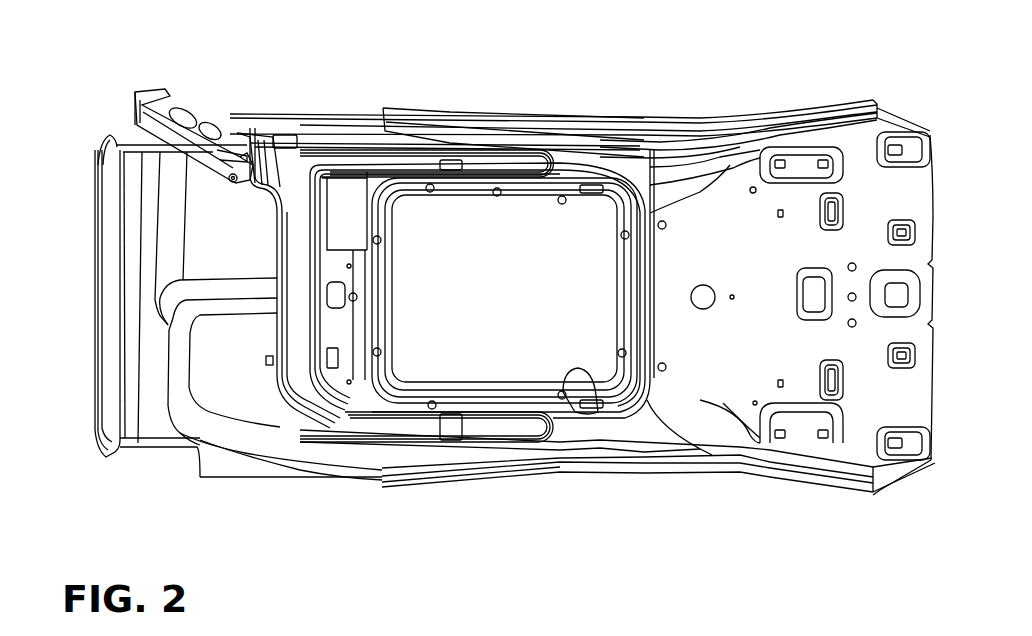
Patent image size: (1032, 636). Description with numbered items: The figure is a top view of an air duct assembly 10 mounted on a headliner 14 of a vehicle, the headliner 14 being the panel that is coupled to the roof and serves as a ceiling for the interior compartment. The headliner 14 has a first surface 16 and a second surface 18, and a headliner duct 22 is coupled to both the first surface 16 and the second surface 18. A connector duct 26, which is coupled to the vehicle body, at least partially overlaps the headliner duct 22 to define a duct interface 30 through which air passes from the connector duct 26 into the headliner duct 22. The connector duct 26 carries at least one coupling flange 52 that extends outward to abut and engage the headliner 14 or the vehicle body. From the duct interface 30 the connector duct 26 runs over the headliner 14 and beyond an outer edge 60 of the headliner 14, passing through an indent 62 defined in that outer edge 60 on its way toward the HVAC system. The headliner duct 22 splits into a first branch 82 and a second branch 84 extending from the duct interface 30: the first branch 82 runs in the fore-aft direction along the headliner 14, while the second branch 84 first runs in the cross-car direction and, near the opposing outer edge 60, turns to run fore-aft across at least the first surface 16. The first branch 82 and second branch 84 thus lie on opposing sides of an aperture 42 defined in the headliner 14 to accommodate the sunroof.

The air duct assembly 10 is at (236, 95).
The headliner 14 is at (760, 120).
The first surface 16 is at (247, 222).
The second surface 18 is at (307, 132).
The headliner duct 22 is at (332, 140).
The connector duct 26 is at (181, 108).
The duct interface 30 is at (225, 203).
The aperture 42 is at (583, 392).
The coupling flange 52 is at (250, 186).
The outer edge 60 is at (274, 128).
The indent 62 is at (137, 143).
The first branch 82 is at (482, 163).
The second branch 84 is at (297, 360).